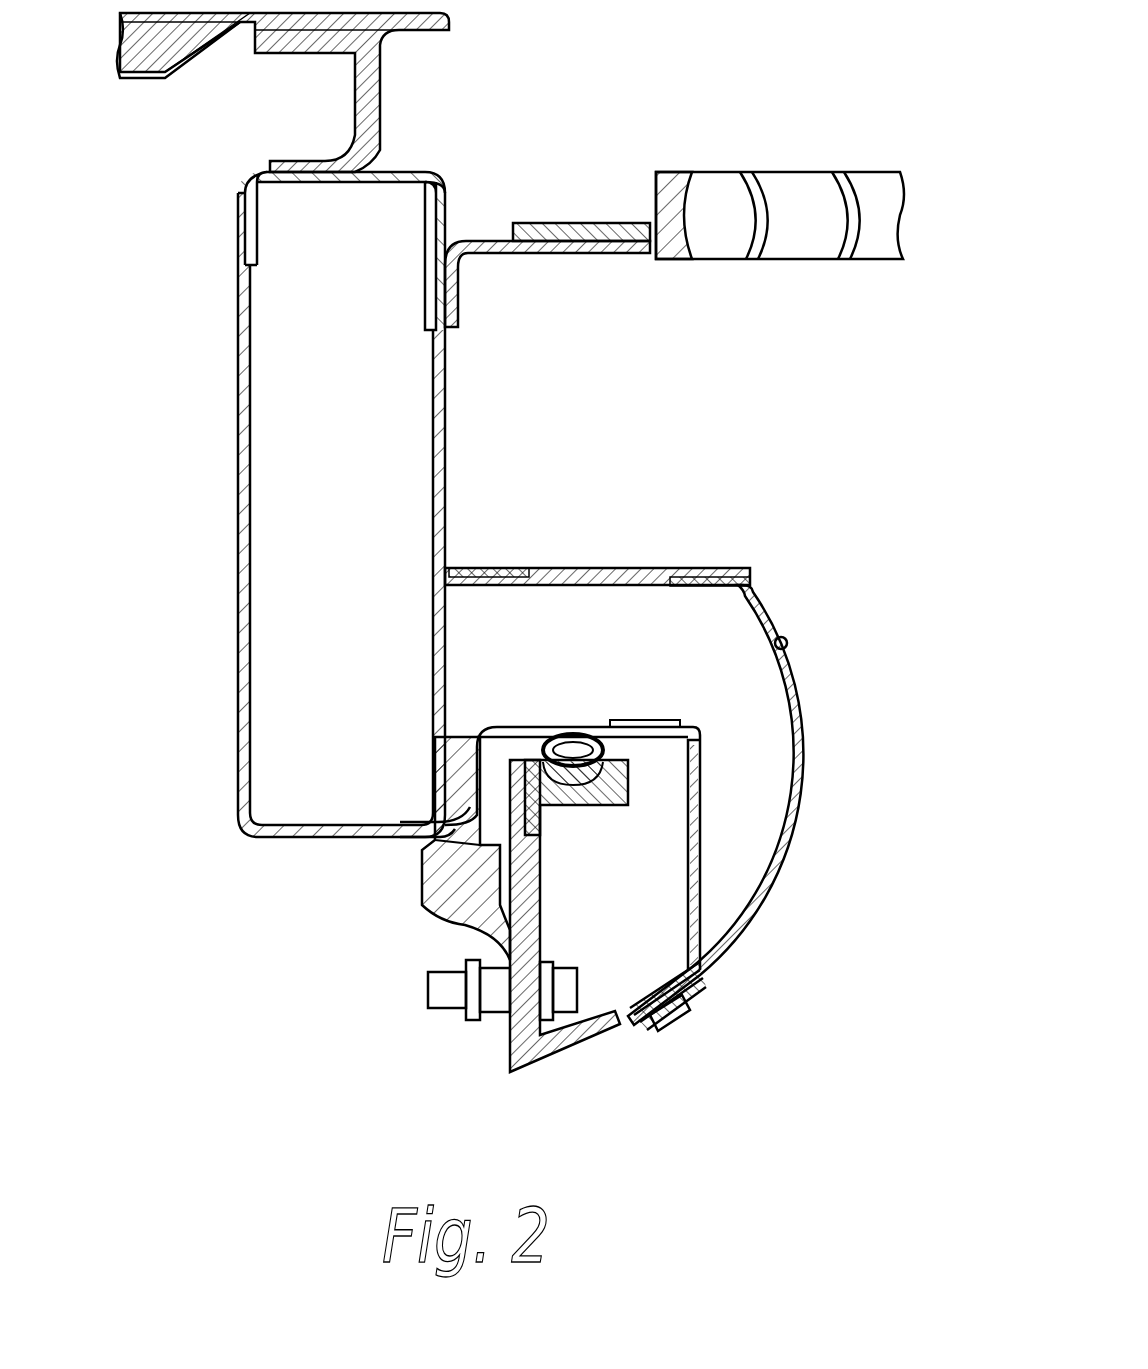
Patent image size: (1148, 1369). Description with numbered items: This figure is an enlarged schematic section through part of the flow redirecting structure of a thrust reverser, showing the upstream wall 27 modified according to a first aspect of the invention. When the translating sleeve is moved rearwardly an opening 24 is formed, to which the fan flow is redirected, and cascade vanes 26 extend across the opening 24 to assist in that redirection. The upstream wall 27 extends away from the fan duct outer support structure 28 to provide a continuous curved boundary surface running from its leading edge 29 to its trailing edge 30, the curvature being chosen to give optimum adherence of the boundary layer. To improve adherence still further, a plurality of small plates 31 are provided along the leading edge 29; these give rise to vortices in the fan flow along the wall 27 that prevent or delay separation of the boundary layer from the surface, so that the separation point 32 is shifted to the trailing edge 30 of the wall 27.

The opening 24 is at (635, 108).
The cascade vanes 26 is at (842, 190).
The upstream wall 27 is at (800, 830).
The fan duct outer support structure 28 is at (437, 905).
The leading edge 29 is at (690, 992).
The trailing edge 30 is at (752, 598).
The small plates 31 is at (682, 1015).
The separation point 32 is at (786, 637).